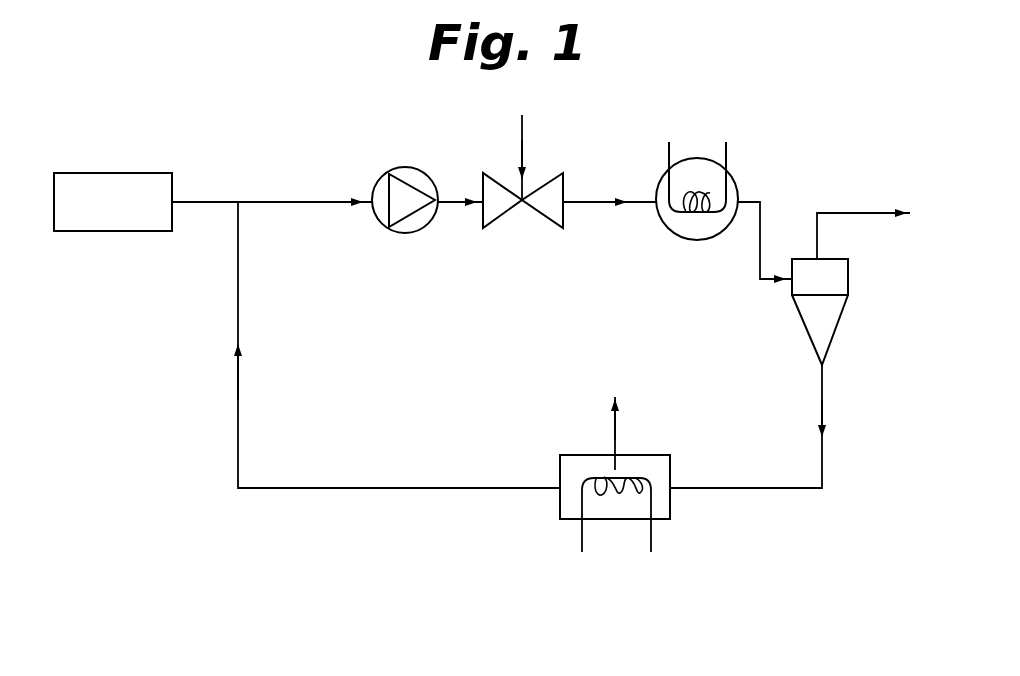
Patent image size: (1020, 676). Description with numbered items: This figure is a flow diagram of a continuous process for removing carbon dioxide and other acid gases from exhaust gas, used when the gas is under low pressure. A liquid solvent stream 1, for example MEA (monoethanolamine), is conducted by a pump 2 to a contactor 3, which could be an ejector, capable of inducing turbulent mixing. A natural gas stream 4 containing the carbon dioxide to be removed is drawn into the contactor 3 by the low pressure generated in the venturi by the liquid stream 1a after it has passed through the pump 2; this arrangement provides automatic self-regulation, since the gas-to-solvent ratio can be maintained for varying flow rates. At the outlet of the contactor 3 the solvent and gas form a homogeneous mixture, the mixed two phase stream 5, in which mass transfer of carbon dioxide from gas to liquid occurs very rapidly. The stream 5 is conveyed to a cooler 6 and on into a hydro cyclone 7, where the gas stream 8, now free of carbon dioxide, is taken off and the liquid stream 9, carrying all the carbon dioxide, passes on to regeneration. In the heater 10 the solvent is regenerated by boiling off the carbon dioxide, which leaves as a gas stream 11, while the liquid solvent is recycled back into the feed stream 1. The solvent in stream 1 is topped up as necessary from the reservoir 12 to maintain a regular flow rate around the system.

The liquid solvent stream 1 is at (323, 201).
The liquid stream after pump 1a is at (450, 203).
The pump 2 is at (405, 167).
The contactor 3 is at (546, 216).
The natural gas stream 4 is at (519, 137).
The mixed two phase stream 5 is at (647, 203).
The cooler 6 is at (710, 239).
The hydro cyclone 7 is at (812, 311).
The gas stream 8 is at (873, 231).
The liquid stream 9 is at (824, 394).
The heater 10 is at (560, 468).
The gas stream 11 is at (621, 420).
The reservoir 12 is at (148, 231).